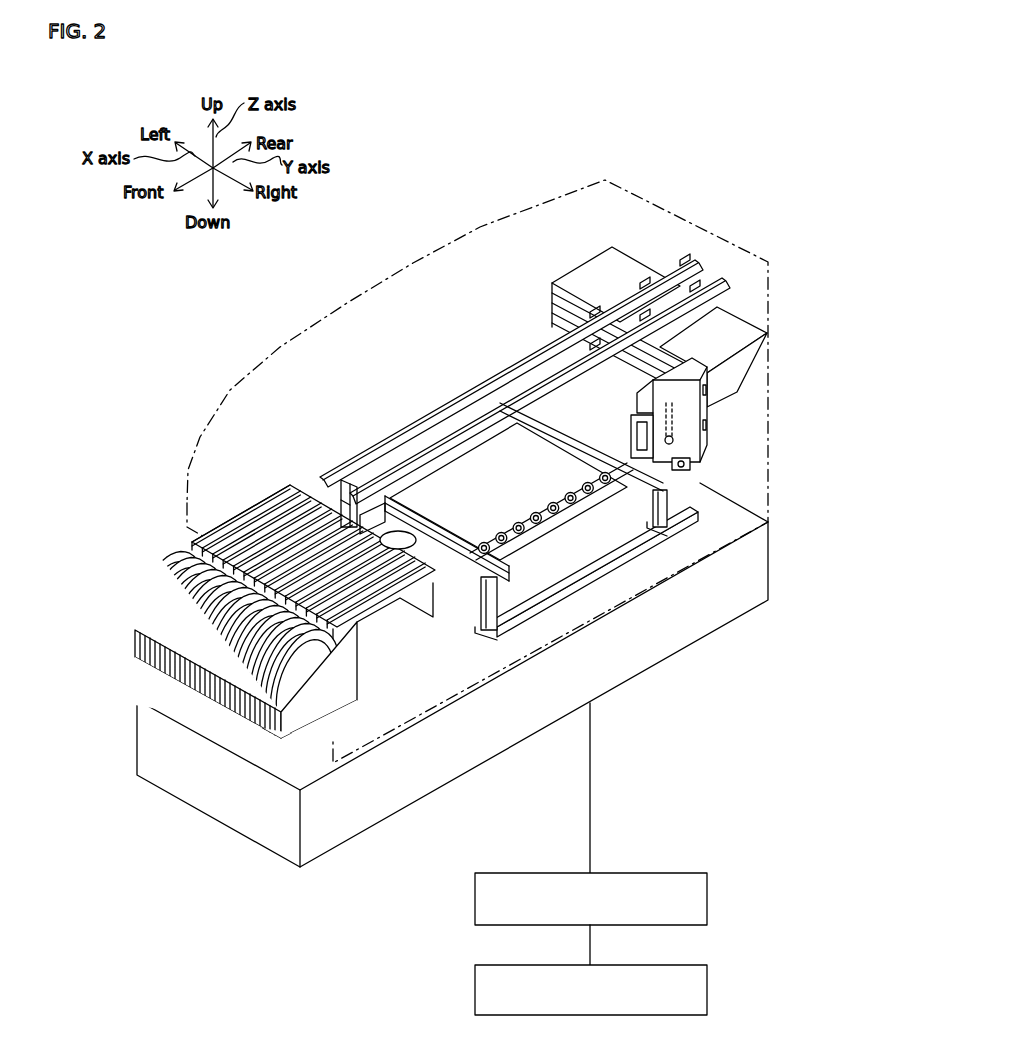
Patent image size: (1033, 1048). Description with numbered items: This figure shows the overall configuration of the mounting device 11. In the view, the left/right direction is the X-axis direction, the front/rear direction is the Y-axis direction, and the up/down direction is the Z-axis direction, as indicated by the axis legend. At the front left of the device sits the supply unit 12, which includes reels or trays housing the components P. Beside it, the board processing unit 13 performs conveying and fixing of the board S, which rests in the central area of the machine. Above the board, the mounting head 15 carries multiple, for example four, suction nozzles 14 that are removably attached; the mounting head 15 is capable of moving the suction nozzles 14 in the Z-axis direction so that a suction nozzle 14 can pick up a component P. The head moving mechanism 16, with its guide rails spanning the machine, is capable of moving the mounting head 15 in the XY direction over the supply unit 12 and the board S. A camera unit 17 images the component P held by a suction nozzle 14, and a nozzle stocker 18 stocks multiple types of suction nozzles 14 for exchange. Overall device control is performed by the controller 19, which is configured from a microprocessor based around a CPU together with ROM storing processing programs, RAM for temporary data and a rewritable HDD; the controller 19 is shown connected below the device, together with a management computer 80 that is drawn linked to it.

The mounting device 11 is at (726, 190).
The supply unit 12 is at (206, 526).
The board processing unit 13 is at (522, 577).
The suction nozzle 14 is at (690, 453).
The mounting head 15 is at (688, 437).
The head moving mechanism 16 is at (540, 305).
The camera unit 17 is at (390, 537).
The nozzle stocker 18 is at (356, 527).
The controller 19 is at (707, 897).
The management computer 80 is at (707, 987).
The board S is at (537, 490).
The component P is at (695, 470).